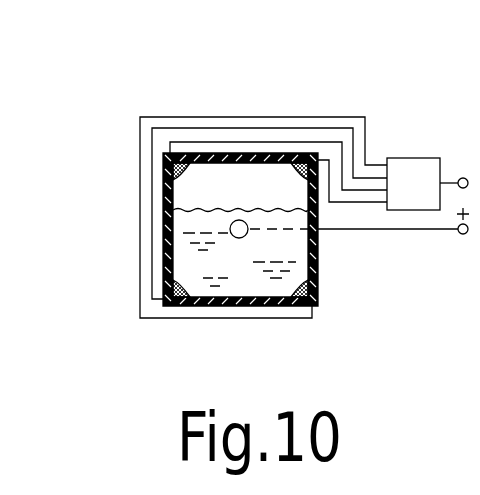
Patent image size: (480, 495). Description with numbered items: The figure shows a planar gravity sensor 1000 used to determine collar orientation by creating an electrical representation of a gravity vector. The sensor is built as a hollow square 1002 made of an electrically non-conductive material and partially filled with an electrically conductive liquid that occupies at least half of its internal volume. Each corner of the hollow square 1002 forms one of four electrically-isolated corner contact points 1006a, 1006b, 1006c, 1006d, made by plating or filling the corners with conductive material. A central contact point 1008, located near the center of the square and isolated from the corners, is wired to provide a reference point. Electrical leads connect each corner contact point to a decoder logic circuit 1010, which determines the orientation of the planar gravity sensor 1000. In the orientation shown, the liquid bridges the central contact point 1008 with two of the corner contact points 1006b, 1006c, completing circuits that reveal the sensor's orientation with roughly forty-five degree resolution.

The planar gravity sensor 1000 is at (207, 100).
The hollow square 1002 is at (257, 153).
The corner contact point 1006a is at (305, 162).
The corner contact point 1006b is at (316, 297).
The corner contact point 1006c is at (173, 307).
The corner contact point 1006d is at (164, 157).
The central contact point 1008 is at (239, 238).
The decoder logic circuit 1010 is at (410, 200).